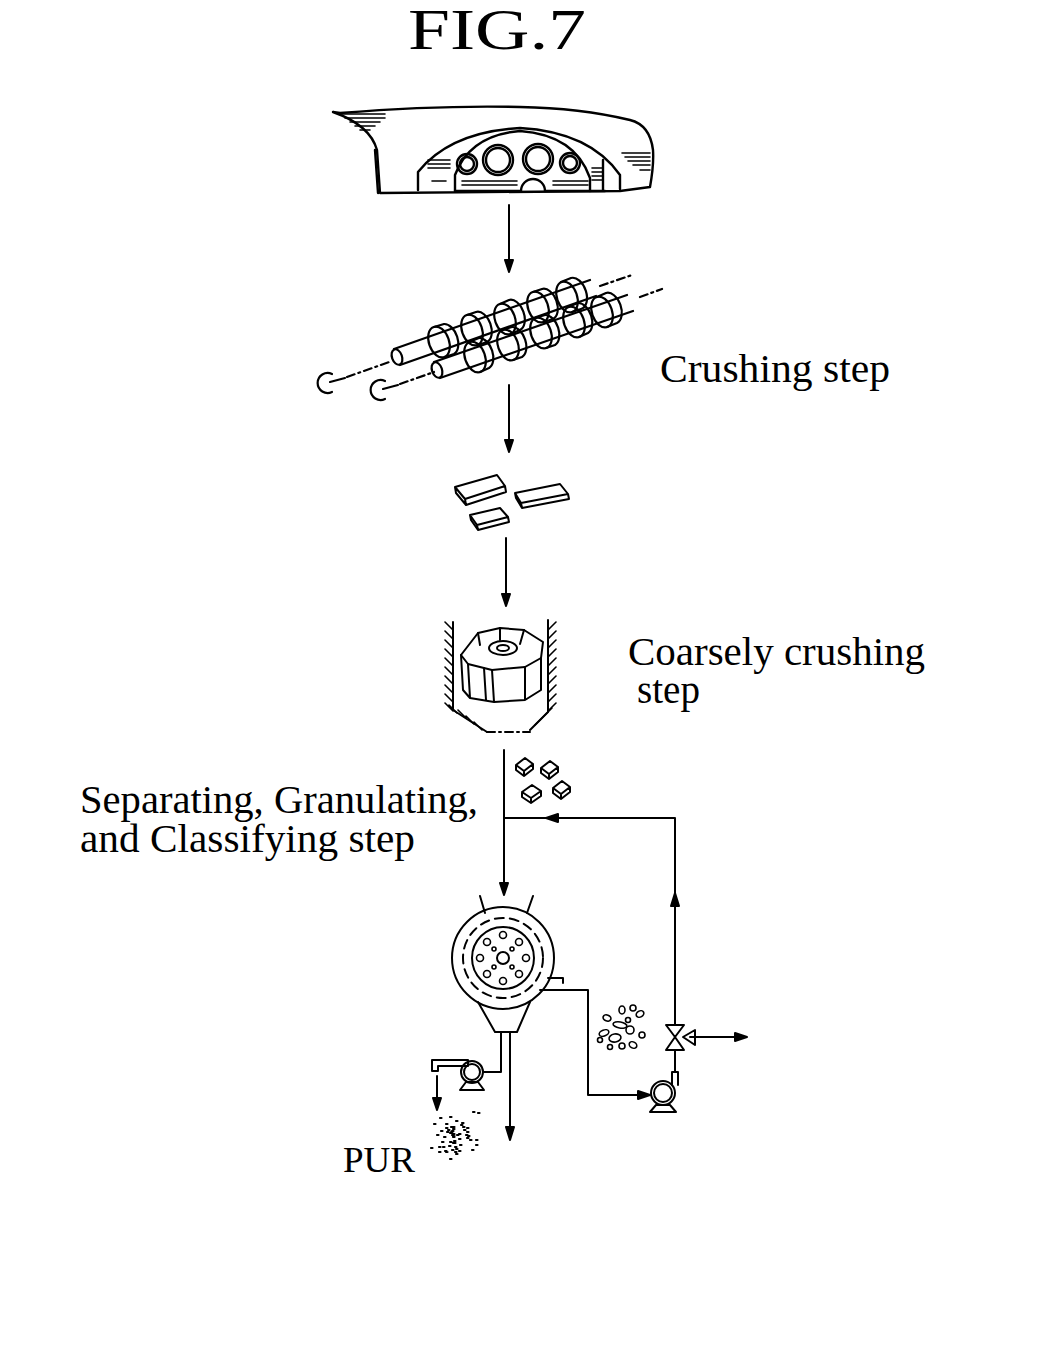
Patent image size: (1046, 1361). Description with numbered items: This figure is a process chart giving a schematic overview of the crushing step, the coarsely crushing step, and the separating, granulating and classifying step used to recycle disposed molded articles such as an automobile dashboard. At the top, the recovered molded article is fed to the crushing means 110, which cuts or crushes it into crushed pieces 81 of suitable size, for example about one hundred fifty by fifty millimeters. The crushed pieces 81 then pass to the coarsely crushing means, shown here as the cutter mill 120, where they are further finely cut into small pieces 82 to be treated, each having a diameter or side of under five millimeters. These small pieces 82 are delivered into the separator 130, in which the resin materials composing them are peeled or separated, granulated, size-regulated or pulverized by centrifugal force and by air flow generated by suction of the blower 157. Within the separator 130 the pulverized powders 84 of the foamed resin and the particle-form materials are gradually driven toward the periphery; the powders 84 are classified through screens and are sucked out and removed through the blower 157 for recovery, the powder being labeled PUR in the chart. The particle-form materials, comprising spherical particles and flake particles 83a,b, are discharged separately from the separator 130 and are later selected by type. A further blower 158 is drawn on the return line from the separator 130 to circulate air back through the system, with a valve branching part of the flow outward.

The crushing means 110 is at (376, 326).
The crushed pieces 81 is at (462, 487).
The cutter mill 120 is at (522, 607).
The small pieces to be treated 82 is at (560, 770).
The separator 130 is at (548, 913).
The spherical particles and flake particles 83a,b is at (627, 1000).
The blower 157 is at (470, 1062).
The pulverized powders of foamed resin 84 is at (467, 1160).
The blower / circulation pump 158 is at (664, 1113).